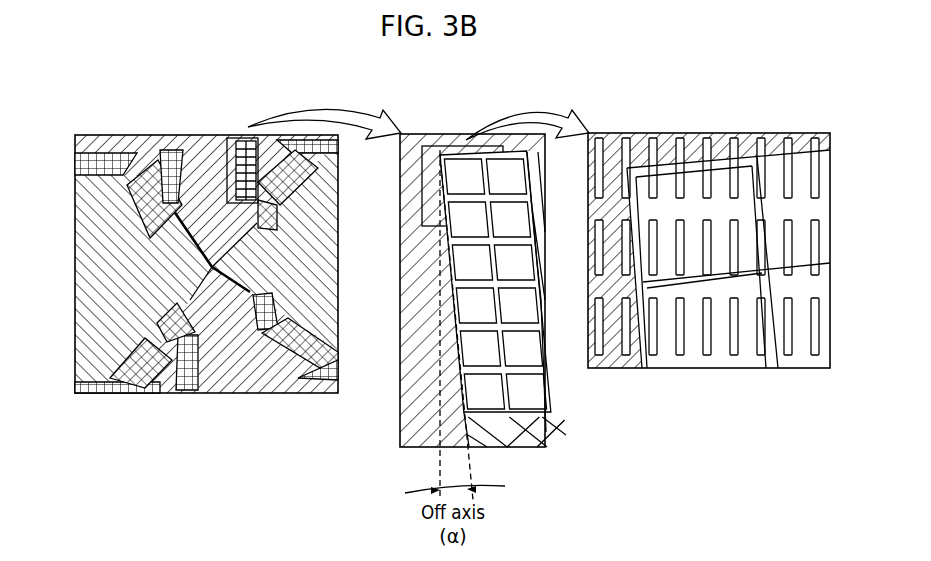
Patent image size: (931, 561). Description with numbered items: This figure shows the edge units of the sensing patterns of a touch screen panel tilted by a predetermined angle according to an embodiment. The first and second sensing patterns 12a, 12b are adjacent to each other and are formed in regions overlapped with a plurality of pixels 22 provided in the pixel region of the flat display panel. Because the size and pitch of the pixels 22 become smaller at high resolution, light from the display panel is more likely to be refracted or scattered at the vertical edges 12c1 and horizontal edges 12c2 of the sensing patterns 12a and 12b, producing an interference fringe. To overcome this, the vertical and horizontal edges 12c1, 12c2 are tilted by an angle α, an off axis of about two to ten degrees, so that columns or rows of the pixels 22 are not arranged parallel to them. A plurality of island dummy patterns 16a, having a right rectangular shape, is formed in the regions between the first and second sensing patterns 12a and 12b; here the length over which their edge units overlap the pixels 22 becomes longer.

The first sensing pattern 12a is at (189, 165).
The second sensing pattern 12b is at (75, 270).
The vertical edge 12c1 is at (225, 160).
The horizontal edge 12c2 is at (243, 131).
The island dummy pattern 16a is at (694, 170).
The pixel 22 is at (733, 150).